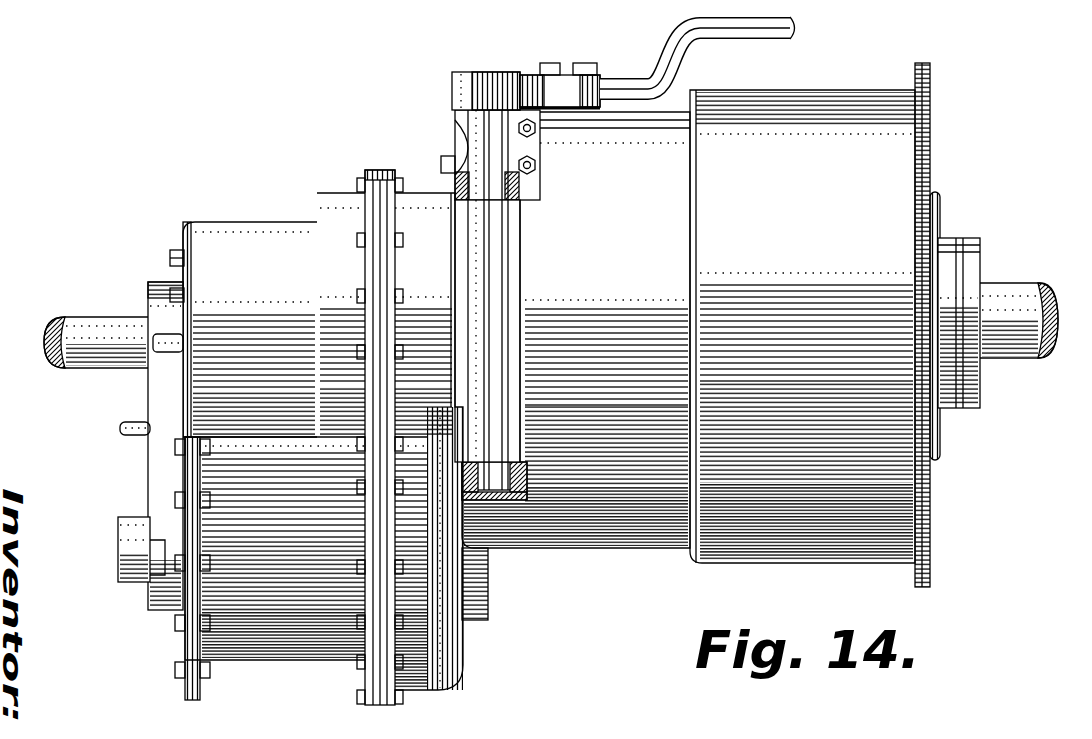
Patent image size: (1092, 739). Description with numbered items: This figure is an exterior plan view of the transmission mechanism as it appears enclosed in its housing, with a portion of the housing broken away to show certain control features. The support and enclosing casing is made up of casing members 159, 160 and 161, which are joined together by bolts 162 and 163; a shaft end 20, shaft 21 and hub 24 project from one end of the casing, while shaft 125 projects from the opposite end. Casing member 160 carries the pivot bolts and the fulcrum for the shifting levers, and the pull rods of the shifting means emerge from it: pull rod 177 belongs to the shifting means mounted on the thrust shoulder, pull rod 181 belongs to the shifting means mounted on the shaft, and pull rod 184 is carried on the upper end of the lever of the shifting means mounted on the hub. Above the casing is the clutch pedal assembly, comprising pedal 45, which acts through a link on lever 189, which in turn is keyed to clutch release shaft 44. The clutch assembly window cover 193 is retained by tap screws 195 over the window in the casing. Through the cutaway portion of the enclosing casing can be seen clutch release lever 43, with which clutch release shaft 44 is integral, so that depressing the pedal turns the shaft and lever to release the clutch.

The shaft end 20 is at (1043, 356).
The drive shaft 21 is at (982, 284).
The shaft hub 24 is at (953, 250).
The clutch release lever 43 is at (520, 456).
The clutch release shaft 44 is at (497, 268).
The pedal 45 is at (683, 58).
The output shaft 125 is at (48, 336).
The casing member 159 is at (835, 106).
The casing member 160 is at (272, 236).
The casing member 161 is at (164, 307).
The bolts 162 is at (374, 178).
The bolts 163 is at (171, 257).
The pull rod 177 is at (163, 352).
The pull rod 181 is at (167, 552).
The pull rod 184 is at (130, 435).
The lever 189 is at (549, 80).
The clutch assembly window cover 193 is at (540, 197).
The tap screws 195 is at (535, 165).